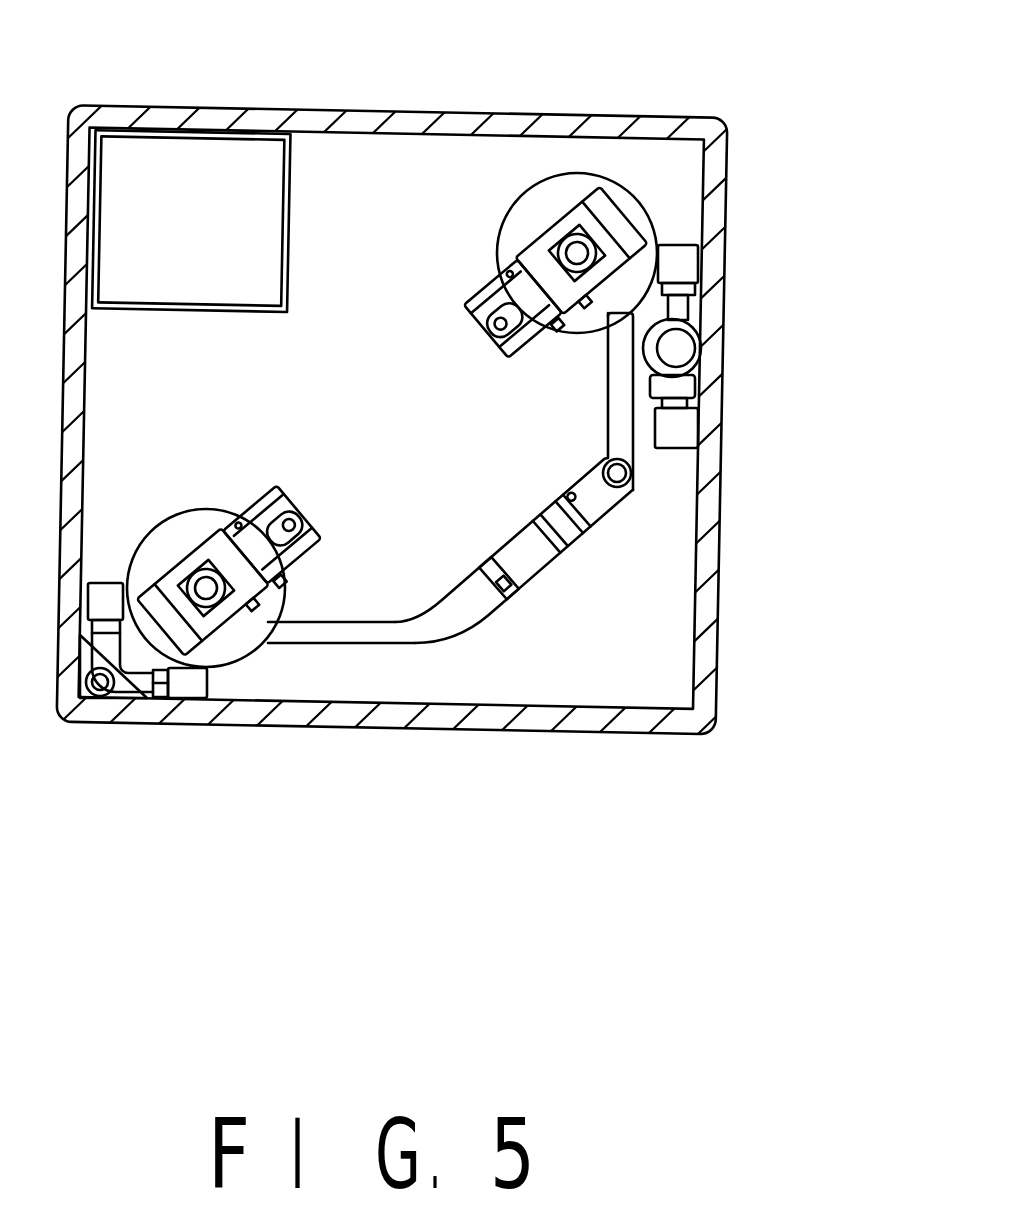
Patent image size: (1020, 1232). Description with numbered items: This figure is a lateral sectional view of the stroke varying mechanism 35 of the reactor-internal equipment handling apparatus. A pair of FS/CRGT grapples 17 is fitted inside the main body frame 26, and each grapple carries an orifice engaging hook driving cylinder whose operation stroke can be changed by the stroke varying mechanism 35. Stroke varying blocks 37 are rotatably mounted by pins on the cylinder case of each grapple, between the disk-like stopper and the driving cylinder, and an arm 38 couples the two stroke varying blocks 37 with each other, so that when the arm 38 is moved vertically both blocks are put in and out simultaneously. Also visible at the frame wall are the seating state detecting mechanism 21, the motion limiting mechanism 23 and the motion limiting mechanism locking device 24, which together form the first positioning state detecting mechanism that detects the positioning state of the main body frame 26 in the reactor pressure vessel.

The FS/CRGT grapple 17 is at (500, 192).
The seating state detecting mechanism 21 is at (678, 348).
The motion limiting mechanism 23 is at (390, 471).
The motion limiting mechanism locking device 24 is at (143, 640).
The main body frame 26 is at (162, 106).
The stroke varying mechanism 35 is at (459, 577).
The stroke varying block 37 is at (607, 295).
The arm 38 is at (382, 635).